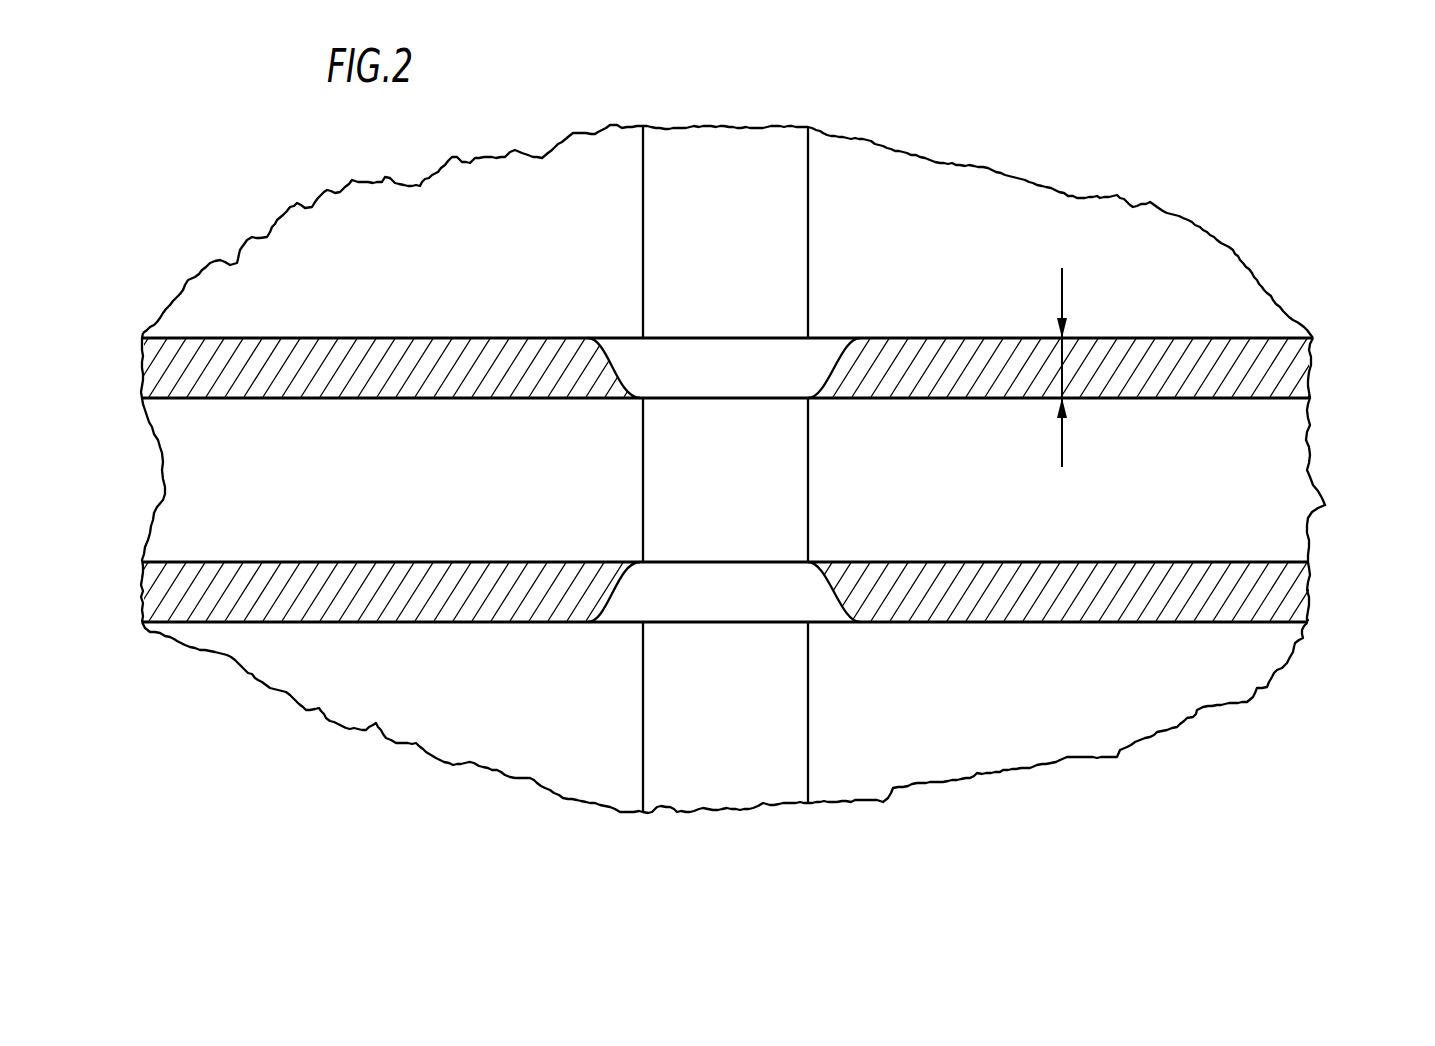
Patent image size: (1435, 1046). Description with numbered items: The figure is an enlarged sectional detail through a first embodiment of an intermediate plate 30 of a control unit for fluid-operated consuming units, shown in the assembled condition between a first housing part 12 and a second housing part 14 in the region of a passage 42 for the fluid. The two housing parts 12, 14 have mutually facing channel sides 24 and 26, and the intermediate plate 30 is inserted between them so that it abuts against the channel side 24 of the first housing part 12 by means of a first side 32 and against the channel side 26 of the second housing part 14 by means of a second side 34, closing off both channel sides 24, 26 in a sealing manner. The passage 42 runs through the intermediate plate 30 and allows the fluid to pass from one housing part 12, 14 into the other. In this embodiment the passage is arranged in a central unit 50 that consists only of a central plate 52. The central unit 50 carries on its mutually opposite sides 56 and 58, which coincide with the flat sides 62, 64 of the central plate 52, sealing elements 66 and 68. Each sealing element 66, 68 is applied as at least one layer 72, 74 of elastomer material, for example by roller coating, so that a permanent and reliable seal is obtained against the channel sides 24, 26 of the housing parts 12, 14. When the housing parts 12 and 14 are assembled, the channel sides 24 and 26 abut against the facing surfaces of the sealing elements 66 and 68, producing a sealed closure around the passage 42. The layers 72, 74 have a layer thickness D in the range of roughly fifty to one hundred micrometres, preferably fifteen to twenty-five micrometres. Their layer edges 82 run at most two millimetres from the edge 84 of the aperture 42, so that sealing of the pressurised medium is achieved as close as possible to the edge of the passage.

The first housing part 12 is at (978, 204).
The second housing part 14 is at (1006, 748).
The channel side 24 is at (1166, 350).
The channel side 26 is at (1222, 609).
The intermediate plate 30 is at (1270, 461).
The first side 32 is at (1100, 340).
The second side 34 is at (1128, 622).
The passage 42 is at (659, 528).
The central unit 50 is at (1270, 501).
The central plate 52 is at (1003, 530).
The side 56 is at (1009, 393).
The side 58 is at (1077, 565).
The flat side 62 is at (1212, 395).
The flat side 64 is at (1173, 563).
The sealing element 66 is at (903, 370).
The sealing element 68 is at (940, 597).
The layer 72 is at (947, 340).
The layer 74 is at (895, 622).
The layer edge 82 is at (835, 372).
The edge of the aperture 84 is at (807, 395).
The layer thickness D is at (1071, 367).